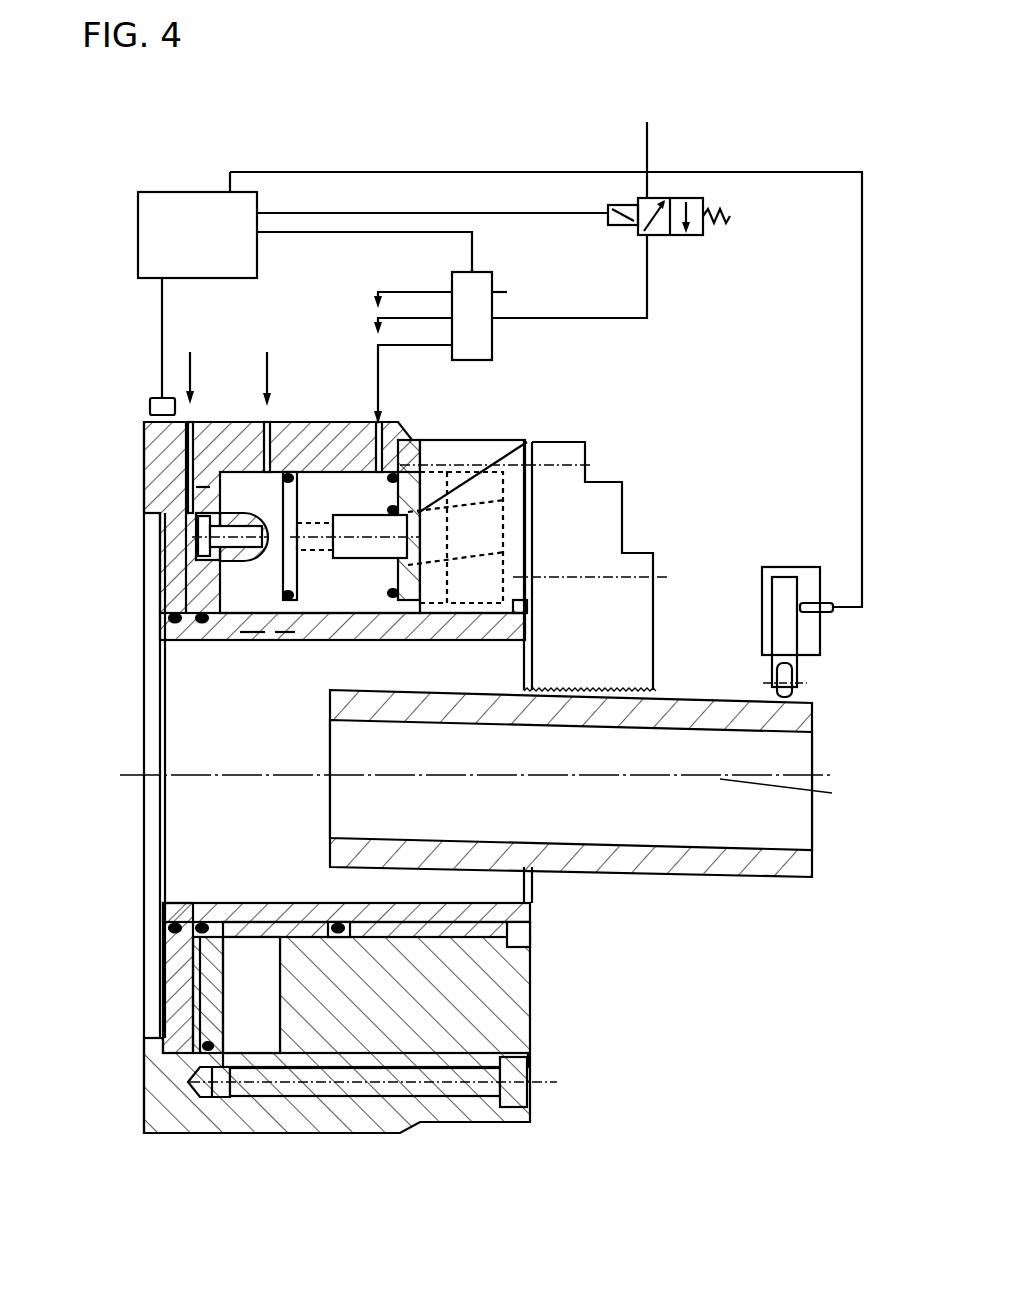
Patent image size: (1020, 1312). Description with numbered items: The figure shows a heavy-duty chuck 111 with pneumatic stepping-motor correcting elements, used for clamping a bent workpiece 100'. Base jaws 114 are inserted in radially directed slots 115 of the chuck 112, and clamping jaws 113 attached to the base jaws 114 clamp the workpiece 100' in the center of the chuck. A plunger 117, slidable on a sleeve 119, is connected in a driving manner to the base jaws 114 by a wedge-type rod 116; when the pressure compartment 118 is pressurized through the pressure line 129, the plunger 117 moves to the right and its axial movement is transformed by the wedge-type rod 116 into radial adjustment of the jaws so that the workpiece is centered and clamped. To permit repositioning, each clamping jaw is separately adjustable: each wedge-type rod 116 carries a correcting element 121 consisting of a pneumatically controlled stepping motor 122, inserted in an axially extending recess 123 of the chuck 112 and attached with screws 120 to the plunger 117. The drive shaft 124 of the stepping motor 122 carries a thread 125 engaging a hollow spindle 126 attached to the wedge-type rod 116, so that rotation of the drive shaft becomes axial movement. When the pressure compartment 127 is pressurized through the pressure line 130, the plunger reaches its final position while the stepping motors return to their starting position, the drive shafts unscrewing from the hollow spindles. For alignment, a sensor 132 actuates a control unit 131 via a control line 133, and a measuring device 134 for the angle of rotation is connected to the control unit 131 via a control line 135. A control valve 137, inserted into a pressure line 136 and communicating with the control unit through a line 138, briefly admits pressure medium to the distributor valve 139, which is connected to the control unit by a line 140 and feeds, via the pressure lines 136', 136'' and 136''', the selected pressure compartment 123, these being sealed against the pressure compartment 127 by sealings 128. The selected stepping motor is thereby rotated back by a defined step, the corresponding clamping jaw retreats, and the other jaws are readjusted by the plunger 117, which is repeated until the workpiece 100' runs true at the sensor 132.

The bent workpiece 100' is at (476, 833).
The heavy-duty chuck 111 is at (106, 1085).
The chuck 112 is at (376, 1115).
The clamping jaws 113 is at (635, 578).
The base jaws 114 is at (472, 455).
The radially directed slots 115 is at (437, 590).
The wedge-type rod 116 is at (530, 443).
The plunger 117 is at (205, 1000).
The pressure compartment 118 is at (193, 963).
The sleeve 119 is at (165, 631).
The screws 120 is at (196, 528).
The correcting element 121 is at (222, 640).
The stepping motor 122 is at (215, 568).
The recesses / pressure compartments 123 is at (335, 478).
The drive shaft 124 is at (318, 562).
The thread 125 is at (252, 633).
The hollow spindle 126 is at (405, 616).
The pressure compartment 127 is at (198, 488).
The sealings 128 is at (283, 636).
The pressure line 129 is at (185, 366).
The pressure line 130 is at (264, 376).
The control unit 131 is at (128, 250).
The sensor 132 is at (822, 635).
The control line 133 is at (748, 172).
The measuring device for the angle of rotation 134 is at (120, 399).
The control line 135 is at (158, 311).
The pressure line 136 is at (569, 204).
The pressure line 136' is at (417, 408).
The pressure line 136'' is at (376, 340).
The pressure line 136''' is at (411, 274).
The control valve 137 is at (690, 198).
The line 138 is at (422, 212).
The distributor valve 139 is at (495, 293).
The line 140 is at (342, 230).